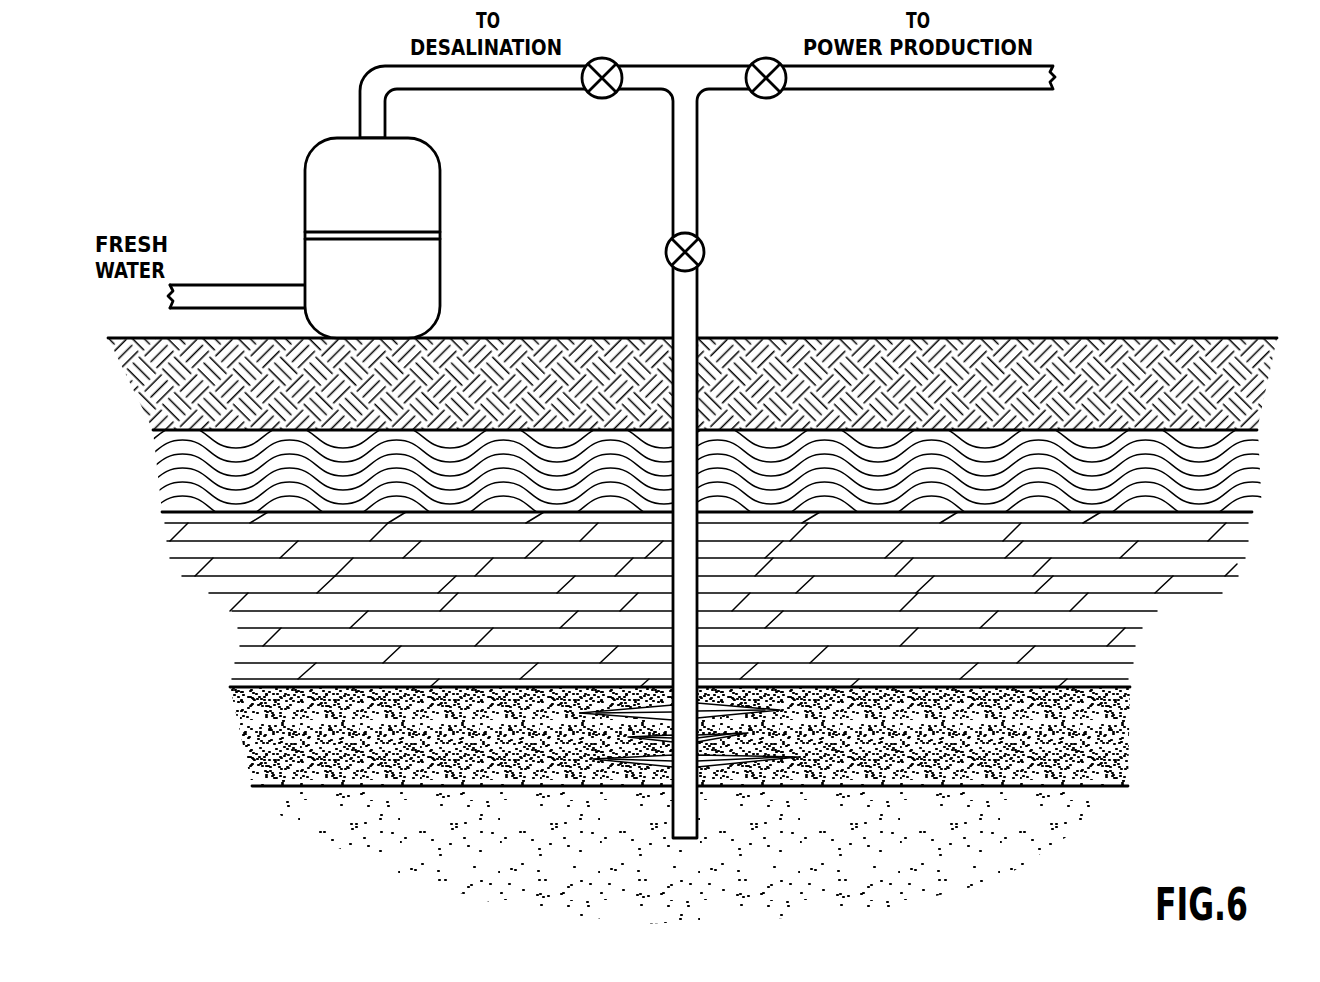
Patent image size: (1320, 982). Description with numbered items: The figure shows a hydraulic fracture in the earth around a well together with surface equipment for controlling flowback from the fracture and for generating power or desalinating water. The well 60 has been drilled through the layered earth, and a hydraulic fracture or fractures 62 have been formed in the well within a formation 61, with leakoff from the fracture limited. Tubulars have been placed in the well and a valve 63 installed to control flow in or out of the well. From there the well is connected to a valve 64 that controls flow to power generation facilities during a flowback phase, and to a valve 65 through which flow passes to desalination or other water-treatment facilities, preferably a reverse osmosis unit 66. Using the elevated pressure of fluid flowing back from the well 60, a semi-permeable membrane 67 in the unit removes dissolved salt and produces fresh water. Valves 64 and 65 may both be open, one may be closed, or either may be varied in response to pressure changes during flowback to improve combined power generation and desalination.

The well 60 is at (706, 602).
The reservoir formation 61 is at (1105, 725).
The hydraulic fracture 62 is at (742, 762).
The valve 63 is at (705, 250).
The valve 64 is at (766, 58).
The valve 65 is at (598, 98).
The reverse osmosis unit 66 is at (336, 137).
The semi-permeable membrane 67 is at (318, 230).